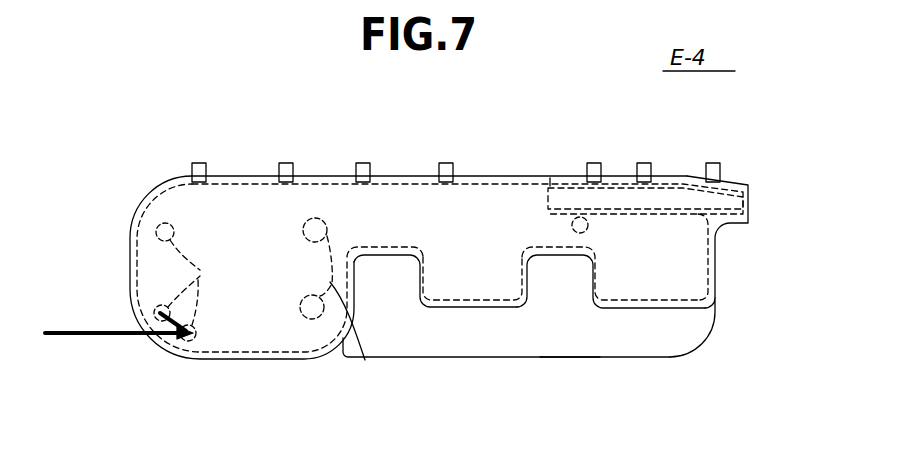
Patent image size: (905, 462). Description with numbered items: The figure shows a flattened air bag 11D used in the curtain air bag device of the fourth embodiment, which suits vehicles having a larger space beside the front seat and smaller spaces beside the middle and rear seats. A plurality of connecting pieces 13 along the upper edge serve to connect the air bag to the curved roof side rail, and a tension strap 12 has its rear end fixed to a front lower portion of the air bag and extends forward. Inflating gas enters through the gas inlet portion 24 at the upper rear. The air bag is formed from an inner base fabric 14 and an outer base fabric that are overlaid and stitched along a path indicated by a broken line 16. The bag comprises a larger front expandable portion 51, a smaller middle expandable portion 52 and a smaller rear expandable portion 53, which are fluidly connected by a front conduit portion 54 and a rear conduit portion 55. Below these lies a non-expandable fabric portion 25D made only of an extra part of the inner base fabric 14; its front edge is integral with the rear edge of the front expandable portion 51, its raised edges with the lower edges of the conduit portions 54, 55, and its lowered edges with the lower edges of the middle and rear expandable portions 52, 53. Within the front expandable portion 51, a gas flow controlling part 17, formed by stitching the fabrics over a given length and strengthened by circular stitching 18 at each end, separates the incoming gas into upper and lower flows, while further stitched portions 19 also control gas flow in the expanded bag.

The air bag 11D is at (126, 204).
The tension strap 12 is at (130, 340).
The connecting pieces 13 is at (199, 172).
The inner base fabric 14 is at (447, 358).
The broken line 16 is at (531, 187).
The gas flow controlling part 17 is at (365, 360).
The circular stitching 18 is at (306, 239).
The stitched portions 19 is at (199, 276).
The gas inlet portion 24 is at (735, 203).
The non-expandable fabric portion 25D is at (556, 368).
The front expandable portion 51 is at (245, 240).
The middle expandable portion 52 is at (468, 253).
The rear expandable portion 53 is at (657, 268).
The front conduit portion 54 is at (383, 220).
The rear conduit portion 55 is at (548, 228).